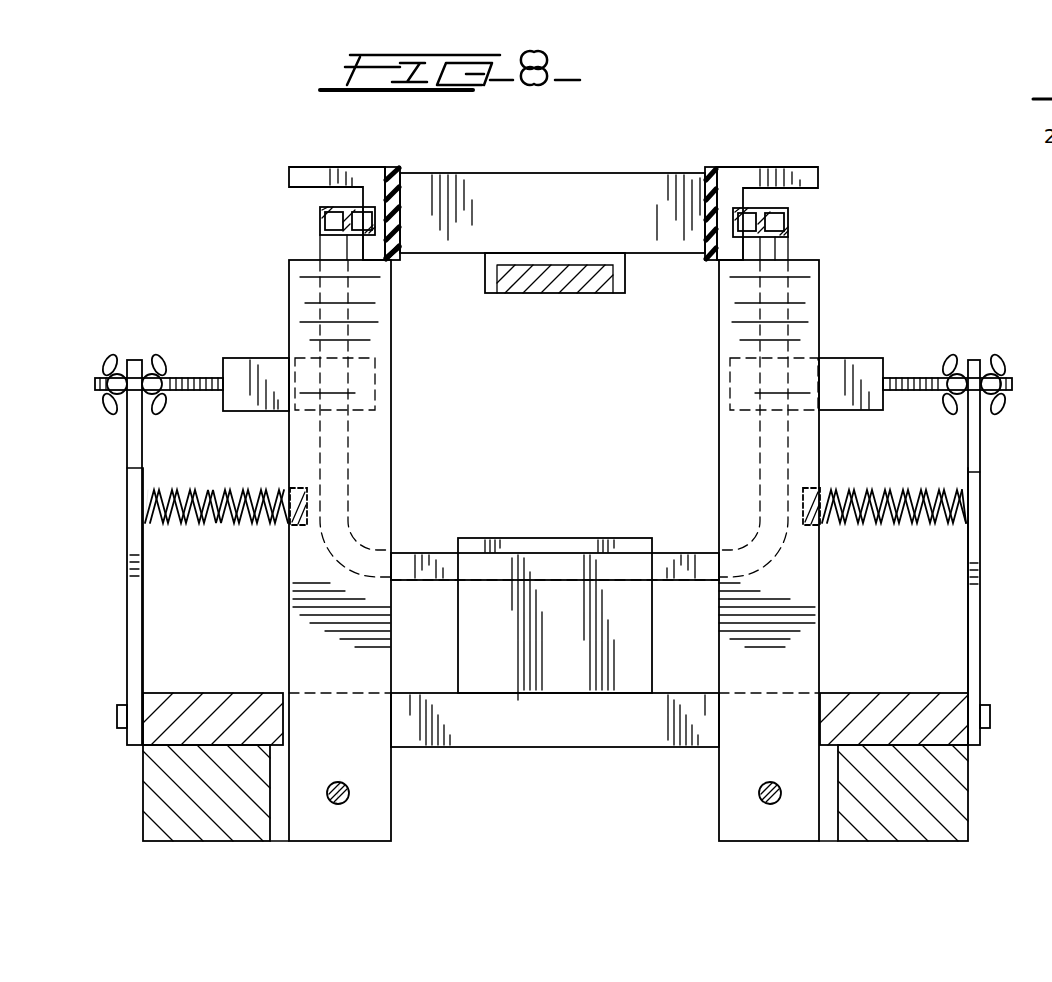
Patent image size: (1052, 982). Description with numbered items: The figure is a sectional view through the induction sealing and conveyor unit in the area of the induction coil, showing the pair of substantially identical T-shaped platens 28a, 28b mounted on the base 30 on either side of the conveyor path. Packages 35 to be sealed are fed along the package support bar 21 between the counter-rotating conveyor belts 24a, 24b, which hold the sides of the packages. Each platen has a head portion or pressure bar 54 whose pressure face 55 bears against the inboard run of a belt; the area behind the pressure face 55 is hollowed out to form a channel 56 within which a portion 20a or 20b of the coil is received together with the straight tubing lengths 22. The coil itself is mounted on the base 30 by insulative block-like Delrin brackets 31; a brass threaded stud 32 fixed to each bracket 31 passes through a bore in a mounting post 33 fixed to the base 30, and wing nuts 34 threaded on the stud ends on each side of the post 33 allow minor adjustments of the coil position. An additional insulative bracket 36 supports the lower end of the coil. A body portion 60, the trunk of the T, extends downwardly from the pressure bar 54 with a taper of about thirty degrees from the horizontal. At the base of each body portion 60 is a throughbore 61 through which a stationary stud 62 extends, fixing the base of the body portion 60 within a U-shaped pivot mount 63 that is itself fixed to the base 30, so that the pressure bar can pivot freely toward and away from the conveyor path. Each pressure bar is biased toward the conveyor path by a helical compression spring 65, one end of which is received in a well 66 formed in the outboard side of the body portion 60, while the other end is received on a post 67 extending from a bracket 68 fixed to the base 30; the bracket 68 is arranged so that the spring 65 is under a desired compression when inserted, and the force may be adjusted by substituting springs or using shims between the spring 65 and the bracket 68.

The portion of the coil 20a is at (322, 222).
The portion of the coil 20b is at (790, 225).
The package support bar 21 is at (555, 283).
The straight tubing lengths 22 is at (362, 212).
The conveyor belt 24a is at (398, 263).
The conveyor belt 24b is at (712, 167).
The platen 28a is at (312, 167).
The platen 28b is at (790, 167).
The base 30 is at (598, 742).
The bracket 31 is at (250, 360).
The threaded stud 32 is at (190, 392).
The mounting post 33 is at (142, 455).
The wing nuts 34 is at (157, 356).
The packages 35 is at (545, 173).
The insulative bracket 36 is at (640, 663).
The pressure bar 54 is at (283, 178).
The pressure face 55 is at (393, 170).
The channel 56 is at (290, 245).
The body portion 60 is at (373, 517).
The throughbore 61 is at (391, 797).
The stationary stud 62 is at (165, 527).
The pivot mount 63 is at (218, 832).
The helical compression spring 65 is at (230, 526).
The well 66 is at (297, 522).
The post 67 is at (955, 526).
The bracket 68 is at (143, 660).